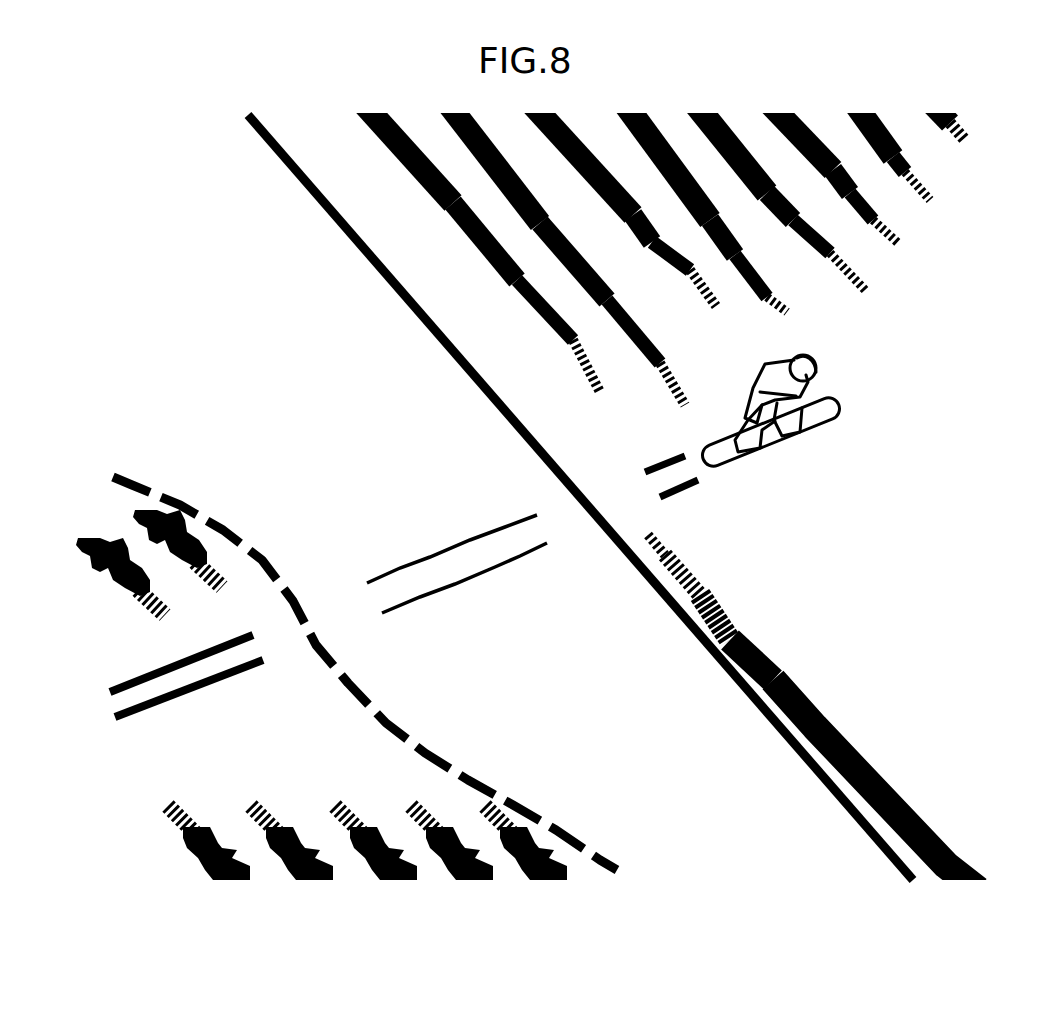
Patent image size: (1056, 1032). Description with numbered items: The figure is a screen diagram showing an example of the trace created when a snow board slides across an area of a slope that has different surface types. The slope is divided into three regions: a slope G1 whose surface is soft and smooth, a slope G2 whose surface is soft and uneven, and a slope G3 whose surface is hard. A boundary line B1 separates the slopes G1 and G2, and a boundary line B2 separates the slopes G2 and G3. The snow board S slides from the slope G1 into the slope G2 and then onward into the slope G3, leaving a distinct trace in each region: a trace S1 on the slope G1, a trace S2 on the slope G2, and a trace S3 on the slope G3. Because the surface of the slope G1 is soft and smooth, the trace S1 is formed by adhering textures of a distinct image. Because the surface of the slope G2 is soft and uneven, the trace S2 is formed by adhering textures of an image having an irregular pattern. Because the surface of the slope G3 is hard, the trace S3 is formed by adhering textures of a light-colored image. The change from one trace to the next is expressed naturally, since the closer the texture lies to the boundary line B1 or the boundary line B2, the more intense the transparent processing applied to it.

The snow board S is at (843, 412).
The trace S1 is at (203, 684).
The trace S2 is at (503, 567).
The trace S3 is at (680, 490).
The boundary line B1 is at (415, 748).
The boundary line B2 is at (791, 744).
The slope G1 is at (321, 695).
The slope G2 is at (650, 754).
The slope G3 is at (669, 495).